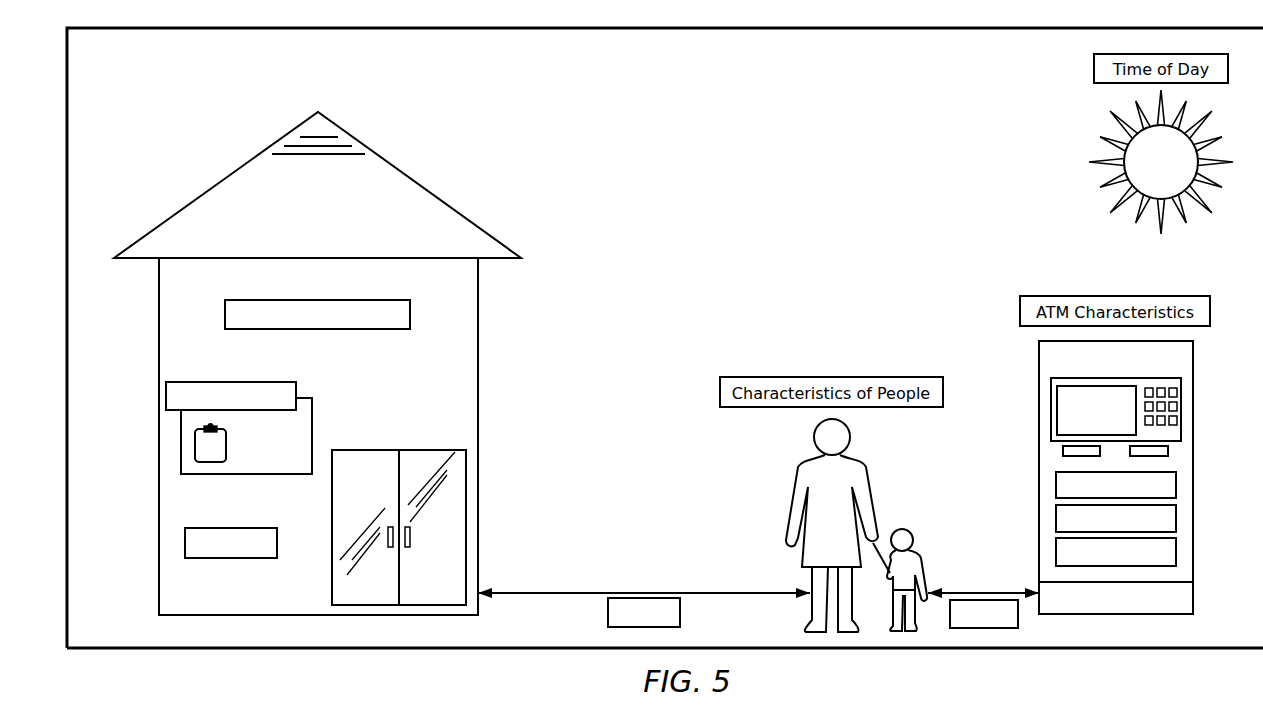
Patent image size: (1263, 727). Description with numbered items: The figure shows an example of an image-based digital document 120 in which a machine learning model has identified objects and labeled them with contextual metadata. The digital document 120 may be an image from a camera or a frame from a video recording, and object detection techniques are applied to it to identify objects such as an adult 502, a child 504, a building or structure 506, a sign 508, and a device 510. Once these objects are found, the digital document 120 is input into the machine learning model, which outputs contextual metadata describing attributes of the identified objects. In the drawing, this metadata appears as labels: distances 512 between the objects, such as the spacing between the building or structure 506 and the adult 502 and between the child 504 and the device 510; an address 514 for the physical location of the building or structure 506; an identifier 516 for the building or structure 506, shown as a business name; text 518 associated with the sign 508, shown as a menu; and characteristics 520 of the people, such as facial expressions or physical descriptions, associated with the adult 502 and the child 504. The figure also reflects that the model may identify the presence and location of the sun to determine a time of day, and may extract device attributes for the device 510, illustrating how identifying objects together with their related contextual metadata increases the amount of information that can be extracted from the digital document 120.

The digital document 120 is at (213, 18).
The adult 502 is at (851, 525).
The child 504 is at (922, 561).
The building or structure 506 is at (462, 346).
The sign 508 is at (215, 441).
The device 510 is at (1075, 400).
The distances 512 is at (578, 592).
The address 514 is at (183, 573).
The identifier 516 is at (388, 288).
The text 518 is at (166, 395).
The characteristics 520 is at (814, 439).